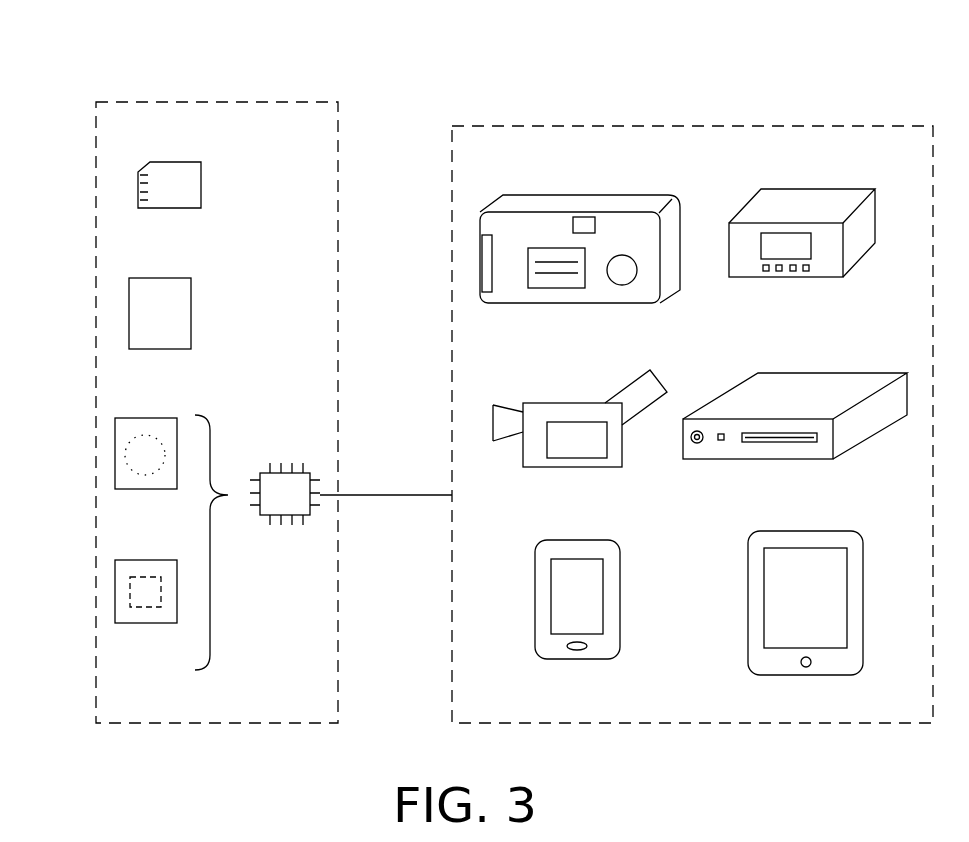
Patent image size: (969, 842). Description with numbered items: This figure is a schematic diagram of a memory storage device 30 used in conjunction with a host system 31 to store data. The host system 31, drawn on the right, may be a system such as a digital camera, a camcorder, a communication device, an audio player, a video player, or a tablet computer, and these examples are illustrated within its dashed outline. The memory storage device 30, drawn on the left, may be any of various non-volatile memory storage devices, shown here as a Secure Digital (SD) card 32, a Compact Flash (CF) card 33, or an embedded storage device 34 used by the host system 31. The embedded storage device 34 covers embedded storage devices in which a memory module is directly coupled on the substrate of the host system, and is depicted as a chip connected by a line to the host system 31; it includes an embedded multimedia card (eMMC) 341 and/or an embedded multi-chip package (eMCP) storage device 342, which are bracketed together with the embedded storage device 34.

The memory storage device 30 is at (207, 100).
The host system 31 is at (618, 124).
The Secure Digital (SD) card 32 is at (138, 190).
The Compact Flash (CF) card 33 is at (129, 315).
The embedded storage device 34 is at (288, 468).
The embedded multimedia card (eMMC) 341 is at (115, 455).
The embedded multi-chip package (eMCP) storage device 342 is at (115, 592).